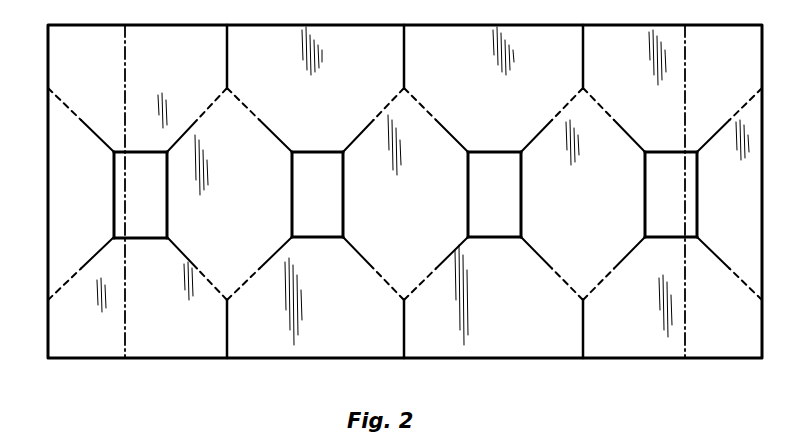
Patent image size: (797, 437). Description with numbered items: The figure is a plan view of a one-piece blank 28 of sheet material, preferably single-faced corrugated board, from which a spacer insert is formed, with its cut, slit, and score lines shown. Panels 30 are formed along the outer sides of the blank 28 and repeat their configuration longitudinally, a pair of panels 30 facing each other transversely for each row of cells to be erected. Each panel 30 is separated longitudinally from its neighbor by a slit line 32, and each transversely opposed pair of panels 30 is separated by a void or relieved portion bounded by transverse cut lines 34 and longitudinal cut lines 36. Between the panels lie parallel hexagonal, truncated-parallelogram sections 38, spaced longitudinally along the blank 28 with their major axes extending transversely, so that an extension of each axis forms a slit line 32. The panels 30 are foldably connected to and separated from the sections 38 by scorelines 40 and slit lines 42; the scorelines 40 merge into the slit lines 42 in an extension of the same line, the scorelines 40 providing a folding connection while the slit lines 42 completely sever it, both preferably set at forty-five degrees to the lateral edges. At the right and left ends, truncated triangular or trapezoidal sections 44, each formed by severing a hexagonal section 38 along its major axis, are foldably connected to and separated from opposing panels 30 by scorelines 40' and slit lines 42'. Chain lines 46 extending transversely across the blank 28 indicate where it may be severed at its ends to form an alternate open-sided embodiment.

The blank 28 is at (104, 358).
The panels 30 is at (177, 82).
The slit line 32 is at (228, 59).
The transverse cut lines 34 is at (168, 190).
The longitudinal cut lines 36 is at (131, 153).
The hexagonal truncated-parallelogram sections 38 is at (249, 192).
The scorelines 40 is at (405, 189).
The scorelines 40' is at (384, 185).
The slit lines 42 is at (406, 193).
The slit lines 42' is at (411, 184).
The truncated triangular sections 44 is at (87, 199).
The chain lines 46 is at (124, 328).